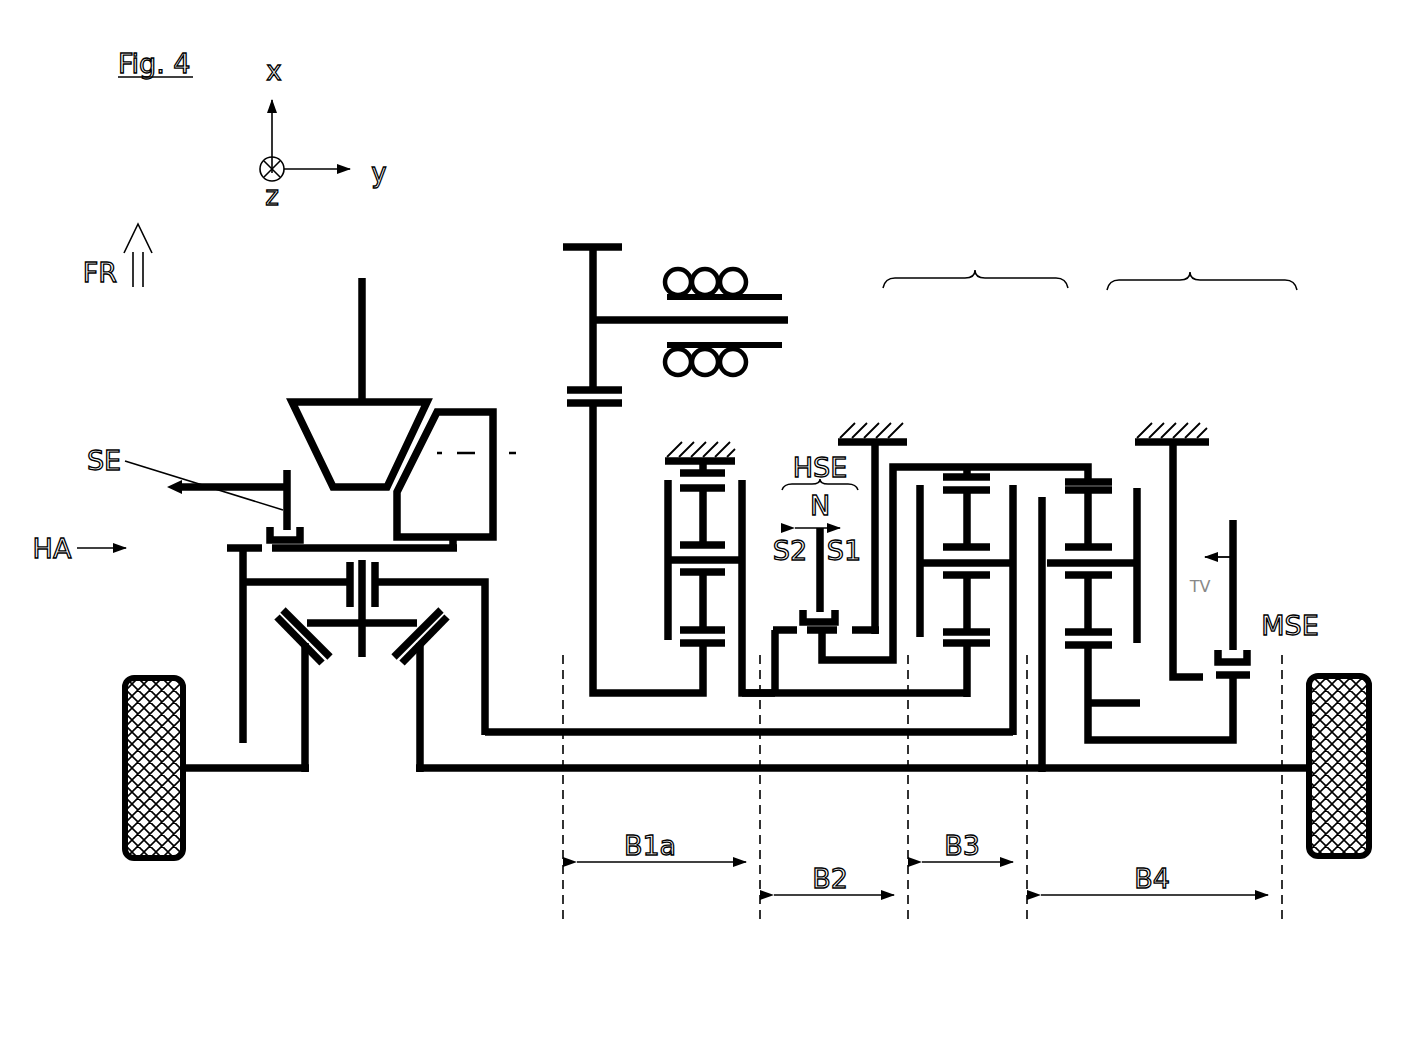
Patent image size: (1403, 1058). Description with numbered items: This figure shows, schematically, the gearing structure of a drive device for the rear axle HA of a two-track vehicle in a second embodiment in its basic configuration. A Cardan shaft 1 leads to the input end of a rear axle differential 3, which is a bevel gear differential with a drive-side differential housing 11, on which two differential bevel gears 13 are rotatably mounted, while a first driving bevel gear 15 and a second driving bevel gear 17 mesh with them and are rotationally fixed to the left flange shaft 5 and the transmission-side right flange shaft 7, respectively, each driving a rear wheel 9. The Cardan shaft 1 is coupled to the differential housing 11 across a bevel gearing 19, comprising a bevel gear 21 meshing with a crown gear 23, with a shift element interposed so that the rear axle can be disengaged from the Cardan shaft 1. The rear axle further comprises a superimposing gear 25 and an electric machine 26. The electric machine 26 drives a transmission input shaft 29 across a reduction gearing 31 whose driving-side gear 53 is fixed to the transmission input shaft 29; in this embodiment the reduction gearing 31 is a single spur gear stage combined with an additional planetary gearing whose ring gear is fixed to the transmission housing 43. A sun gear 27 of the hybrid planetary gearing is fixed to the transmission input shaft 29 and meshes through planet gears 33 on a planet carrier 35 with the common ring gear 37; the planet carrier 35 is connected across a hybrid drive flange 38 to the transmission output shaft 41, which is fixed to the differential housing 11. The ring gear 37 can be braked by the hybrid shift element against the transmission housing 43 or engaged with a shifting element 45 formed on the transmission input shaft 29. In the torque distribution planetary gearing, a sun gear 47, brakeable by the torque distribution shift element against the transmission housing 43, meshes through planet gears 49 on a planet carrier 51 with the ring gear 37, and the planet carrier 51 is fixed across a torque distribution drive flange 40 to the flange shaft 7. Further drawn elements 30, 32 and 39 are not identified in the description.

The Cardan shaft 1 is at (356, 307).
The rear axle differential 3 is at (236, 558).
The flange shaft 5 is at (248, 772).
The flange shaft 7 is at (470, 772).
The vehicle rear wheels 9 is at (148, 676).
The differential housing 11 is at (490, 594).
The differential bevel gears 13 is at (361, 637).
The first driving bevel gear 15 is at (308, 697).
The second driving bevel gear 17 is at (417, 702).
The bevel gearing 19 is at (385, 353).
The bevel gear 21 is at (403, 400).
The crown gear 23 is at (465, 410).
The superimposing gear 25 is at (953, 242).
The electric machine 26 is at (667, 270).
The sun gear 27 is at (952, 476).
The transmission input shaft 29 is at (751, 697).
The motor shaft 30 is at (590, 482).
The reduction gearing 31 is at (539, 456).
The differential 32 is at (652, 549).
The planet gears 33 is at (948, 520).
The planet carrier 35 is at (926, 558).
The ring gear 37 is at (1045, 463).
The hybrid drive flange 38 is at (1011, 685).
The carrier shaft 39 is at (892, 642).
The torque distribution drive flange 40 is at (1045, 722).
The transmission output shaft 41 is at (508, 727).
The transmission housing 43 is at (674, 445).
The shifting element 45 is at (777, 697).
The sun gear 47 is at (1141, 701).
The planet gears 49 is at (1149, 512).
The planet carrier 51 is at (1121, 557).
The driving-side gear 53 is at (734, 445).